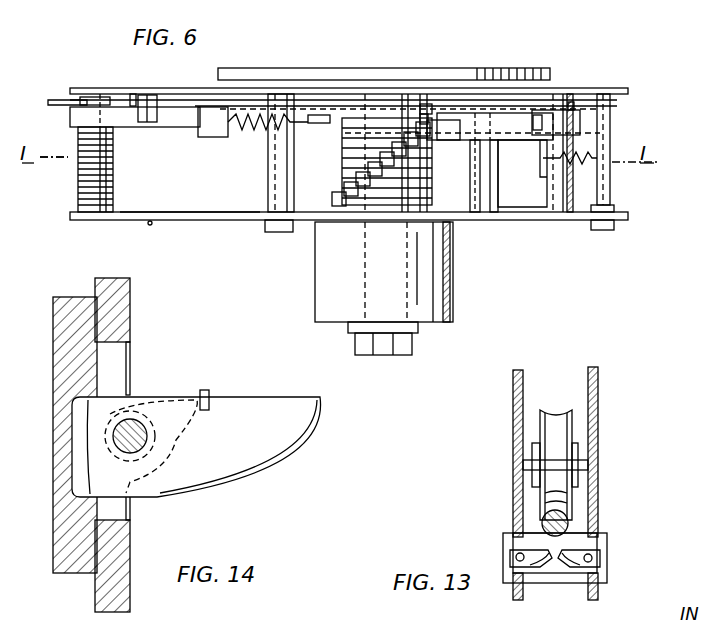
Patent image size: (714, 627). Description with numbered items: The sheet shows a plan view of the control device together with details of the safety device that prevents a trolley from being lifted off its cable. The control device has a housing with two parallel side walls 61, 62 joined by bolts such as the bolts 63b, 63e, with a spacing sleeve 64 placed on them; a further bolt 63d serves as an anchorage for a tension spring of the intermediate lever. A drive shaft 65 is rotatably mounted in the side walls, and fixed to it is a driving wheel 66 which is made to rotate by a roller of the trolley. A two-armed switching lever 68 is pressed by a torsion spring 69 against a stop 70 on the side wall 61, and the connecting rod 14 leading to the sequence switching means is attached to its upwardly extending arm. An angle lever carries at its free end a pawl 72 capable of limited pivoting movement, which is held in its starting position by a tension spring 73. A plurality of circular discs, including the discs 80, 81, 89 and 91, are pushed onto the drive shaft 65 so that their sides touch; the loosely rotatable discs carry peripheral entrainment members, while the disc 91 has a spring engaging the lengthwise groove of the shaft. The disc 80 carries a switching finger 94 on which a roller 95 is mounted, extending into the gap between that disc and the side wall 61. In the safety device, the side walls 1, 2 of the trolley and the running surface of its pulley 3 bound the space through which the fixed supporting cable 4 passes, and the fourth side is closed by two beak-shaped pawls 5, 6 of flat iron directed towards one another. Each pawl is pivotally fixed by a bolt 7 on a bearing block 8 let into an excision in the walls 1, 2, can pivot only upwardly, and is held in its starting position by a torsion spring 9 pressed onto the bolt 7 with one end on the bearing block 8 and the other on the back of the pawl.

In FIG. 6, the connecting rod 14 is at (56, 99).
In FIG. 6, the spacing sleeve 64 is at (96, 88).
In FIG. 6, the side wall 61 is at (137, 94).
In FIG. 6, the stop 70 is at (157, 97).
In FIG. 6, the switching finger 94 is at (428, 104).
In FIG. 6, the roller 95 is at (432, 112).
In FIG. 6, the driving wheel 66 is at (549, 79).
In FIG. 6, the two-armed switching lever 68 is at (55, 150).
In FIG. 6, the pawl 72 is at (198, 130).
In FIG. 6, the tension spring 73 is at (256, 129).
In FIG. 6, the circular disc 81 is at (343, 135).
In FIG. 6, the circular disc 80 is at (436, 118).
In FIG. 6, the torsion spring 69 is at (78, 188).
In FIG. 6, the side wall 62 is at (171, 212).
In FIG. 6, the bolt 63b is at (272, 190).
In FIG. 6, the circular disc 91 is at (333, 203).
In FIG. 6, the circular disc 89 is at (428, 194).
In FIG. 6, the drive shaft 65 is at (316, 250).
In FIG. 6, the bolt 63e is at (558, 214).
In FIG. 6, the bolt 63d is at (601, 231).
In FIG. 14, the side wall 1 is at (125, 321).
In FIG. 13, the side wall 1 is at (516, 397).
In FIG. 13, the side wall 2 is at (603, 392).
In FIG. 13, the pulley 3 is at (553, 420).
In FIG. 13, the fixed supporting cable 4 is at (566, 520).
In FIG. 14, the pawl 5 is at (222, 456).
In FIG. 13, the pawl 6 is at (566, 568).
In FIG. 14, the bolt 7 is at (145, 424).
In FIG. 13, the bolt 7 is at (541, 568).
In FIG. 14, the bearing block 8 is at (75, 565).
In FIG. 13, the bearing block 8 is at (503, 540).
In FIG. 14, the torsion spring 9 is at (210, 394).